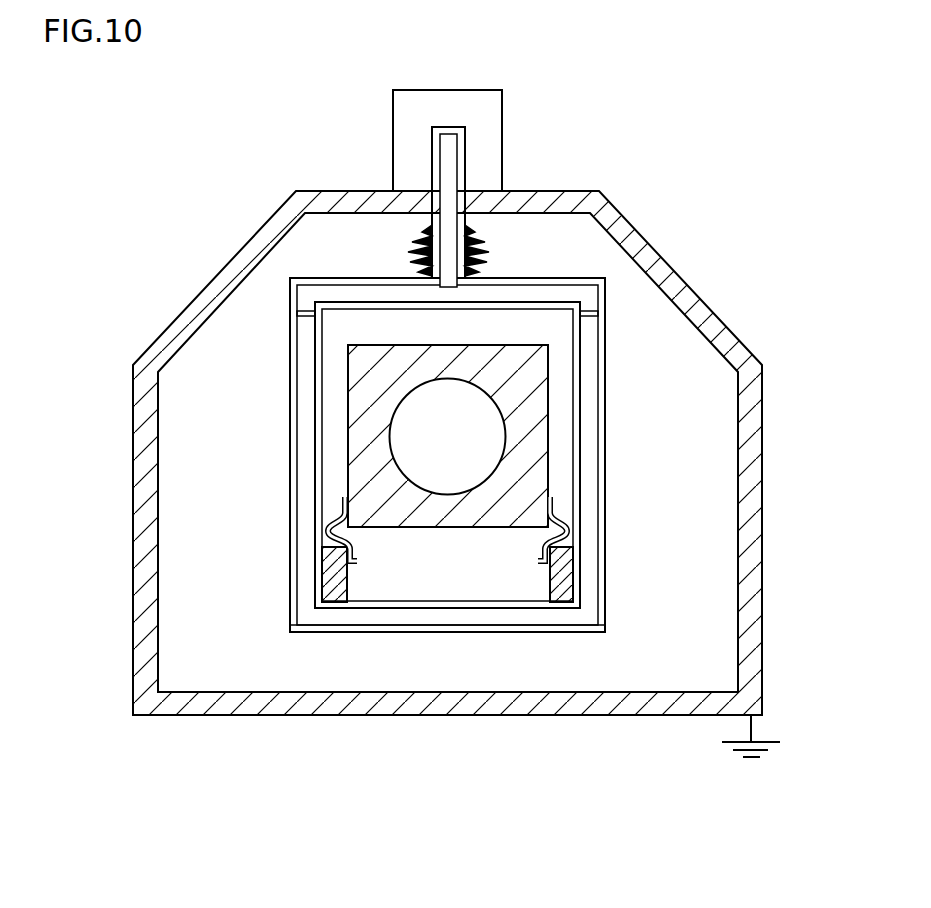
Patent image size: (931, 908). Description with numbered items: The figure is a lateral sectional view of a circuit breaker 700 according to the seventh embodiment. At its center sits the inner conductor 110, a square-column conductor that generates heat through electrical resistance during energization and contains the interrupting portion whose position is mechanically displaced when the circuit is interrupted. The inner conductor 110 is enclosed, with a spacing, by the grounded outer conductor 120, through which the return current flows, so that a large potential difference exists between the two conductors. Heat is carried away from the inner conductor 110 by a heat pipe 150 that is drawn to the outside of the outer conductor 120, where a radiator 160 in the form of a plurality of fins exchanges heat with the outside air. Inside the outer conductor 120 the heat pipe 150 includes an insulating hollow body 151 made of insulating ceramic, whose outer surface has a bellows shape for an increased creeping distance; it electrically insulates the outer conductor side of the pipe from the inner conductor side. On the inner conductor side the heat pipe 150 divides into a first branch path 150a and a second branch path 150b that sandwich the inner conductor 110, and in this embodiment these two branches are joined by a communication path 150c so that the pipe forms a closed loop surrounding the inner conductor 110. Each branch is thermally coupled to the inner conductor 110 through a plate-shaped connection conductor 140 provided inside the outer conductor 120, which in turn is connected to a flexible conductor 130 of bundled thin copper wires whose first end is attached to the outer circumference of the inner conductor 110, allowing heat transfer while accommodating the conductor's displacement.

The circuit breaker 700 is at (199, 152).
The inner conductor 110 is at (348, 462).
The outer conductor 120 is at (764, 630).
The flexible conductor 130 is at (330, 548).
The connection conductor 140 is at (335, 585).
The heat pipe 150 is at (465, 160).
The first branch path 150a is at (605, 332).
The second branch path 150b is at (290, 340).
The communication path 150c is at (447, 634).
The insulating hollow body 151 is at (410, 250).
The radiator 160 is at (432, 89).